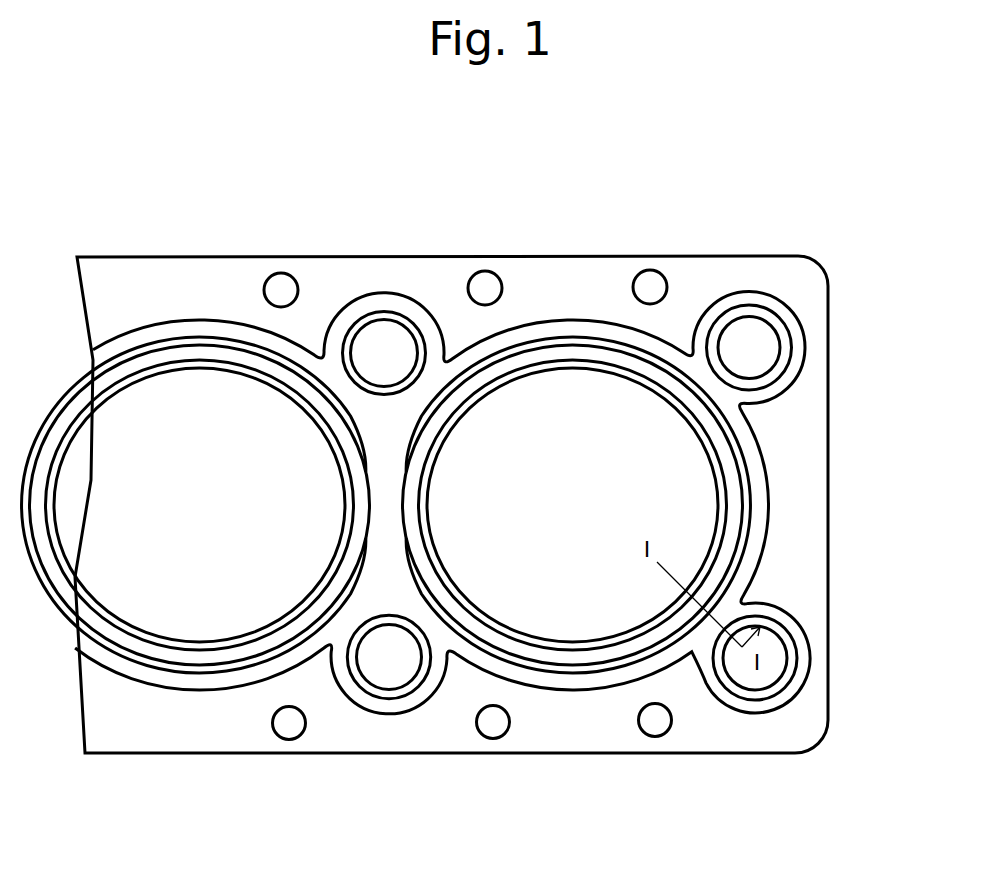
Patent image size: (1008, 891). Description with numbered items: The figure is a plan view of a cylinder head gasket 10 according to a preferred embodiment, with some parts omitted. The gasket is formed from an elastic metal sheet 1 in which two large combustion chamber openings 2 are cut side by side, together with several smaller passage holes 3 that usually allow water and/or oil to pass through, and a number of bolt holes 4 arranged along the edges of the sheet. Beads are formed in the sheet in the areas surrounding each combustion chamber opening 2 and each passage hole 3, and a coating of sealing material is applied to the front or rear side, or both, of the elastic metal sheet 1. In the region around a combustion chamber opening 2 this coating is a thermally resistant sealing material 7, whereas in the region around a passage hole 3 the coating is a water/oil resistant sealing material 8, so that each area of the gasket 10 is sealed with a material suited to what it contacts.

The elastic metal sheet 1 is at (808, 405).
The combustion chamber opening 2 is at (167, 393).
The passage hole 3 is at (384, 345).
The bolt hole 4 is at (280, 287).
The thermally resistant sealing material 7 is at (732, 523).
The water/oil resistant sealing material 8 is at (800, 657).
The cylinder head gasket 10 is at (818, 262).